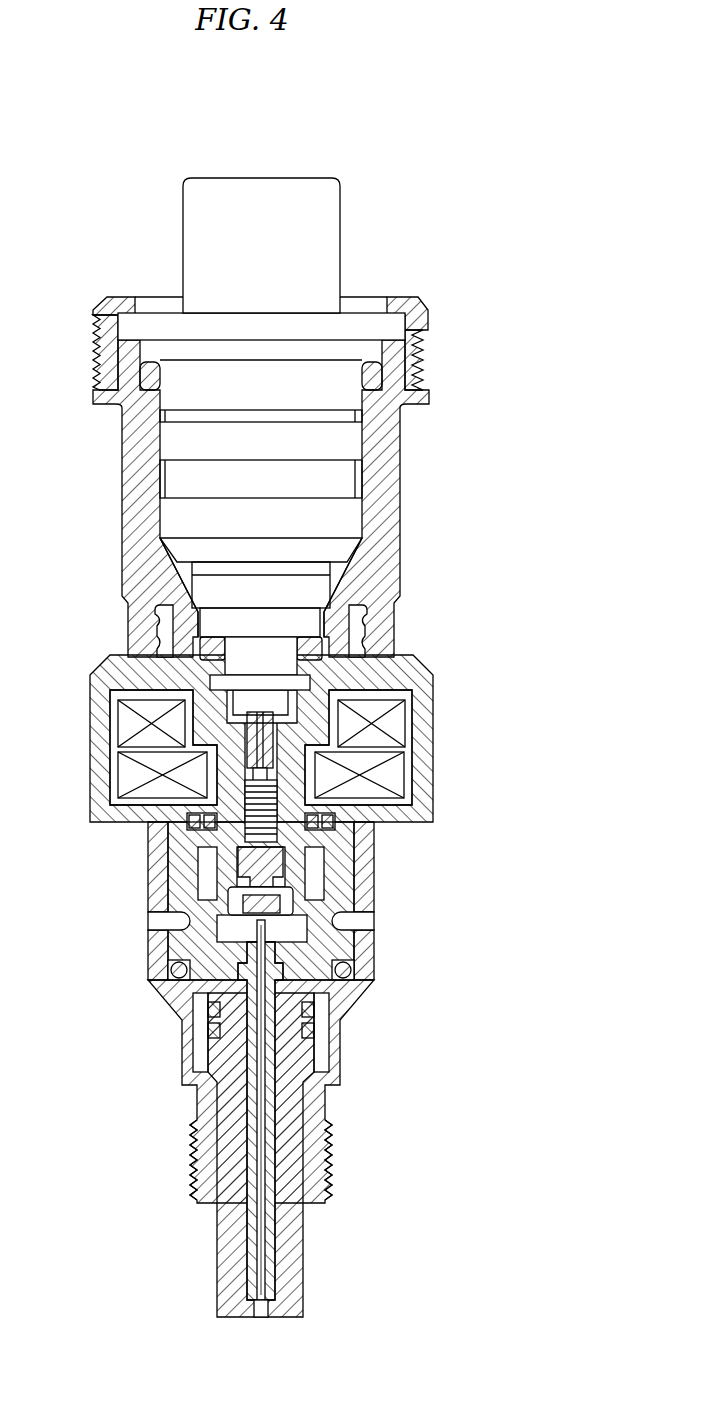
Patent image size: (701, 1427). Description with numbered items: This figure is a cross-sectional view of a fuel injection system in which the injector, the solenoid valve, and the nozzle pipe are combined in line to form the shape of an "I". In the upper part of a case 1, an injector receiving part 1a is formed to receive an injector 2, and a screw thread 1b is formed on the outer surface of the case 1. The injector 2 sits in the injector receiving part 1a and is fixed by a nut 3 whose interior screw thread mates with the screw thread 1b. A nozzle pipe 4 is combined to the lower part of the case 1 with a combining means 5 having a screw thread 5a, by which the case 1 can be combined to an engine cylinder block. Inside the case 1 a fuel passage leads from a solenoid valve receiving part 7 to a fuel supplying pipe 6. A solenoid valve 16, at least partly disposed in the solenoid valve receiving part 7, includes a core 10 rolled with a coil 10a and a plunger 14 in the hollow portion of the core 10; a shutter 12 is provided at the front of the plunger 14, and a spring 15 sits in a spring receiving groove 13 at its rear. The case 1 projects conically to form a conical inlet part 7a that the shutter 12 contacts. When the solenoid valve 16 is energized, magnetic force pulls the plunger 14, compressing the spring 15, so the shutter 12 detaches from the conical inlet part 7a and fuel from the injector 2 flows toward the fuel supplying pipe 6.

The case 1 is at (133, 483).
The injector receiving part 1a is at (366, 548).
The screw thread 1b is at (423, 371).
The injector 2 is at (263, 178).
The nut 3 is at (424, 300).
The nozzle pipe 4 is at (236, 1250).
The combining means 5 is at (190, 1030).
The screw thread 5a is at (192, 1180).
The fuel supplying pipe 6 is at (258, 1100).
The solenoid valve receiving part 7 is at (223, 882).
The conical inlet part 7a is at (190, 921).
The core 10 is at (413, 720).
The coil 10a is at (395, 768).
The shutter 12 is at (313, 960).
The spring receiving groove 13 is at (290, 828).
The plunger 14 is at (295, 900).
The spring 15 is at (410, 800).
The solenoid valve 16 is at (306, 715).